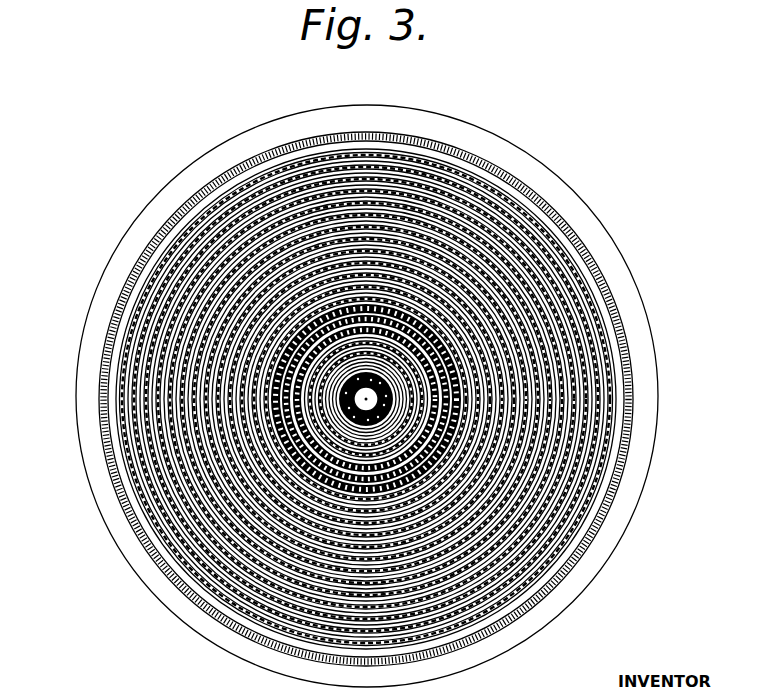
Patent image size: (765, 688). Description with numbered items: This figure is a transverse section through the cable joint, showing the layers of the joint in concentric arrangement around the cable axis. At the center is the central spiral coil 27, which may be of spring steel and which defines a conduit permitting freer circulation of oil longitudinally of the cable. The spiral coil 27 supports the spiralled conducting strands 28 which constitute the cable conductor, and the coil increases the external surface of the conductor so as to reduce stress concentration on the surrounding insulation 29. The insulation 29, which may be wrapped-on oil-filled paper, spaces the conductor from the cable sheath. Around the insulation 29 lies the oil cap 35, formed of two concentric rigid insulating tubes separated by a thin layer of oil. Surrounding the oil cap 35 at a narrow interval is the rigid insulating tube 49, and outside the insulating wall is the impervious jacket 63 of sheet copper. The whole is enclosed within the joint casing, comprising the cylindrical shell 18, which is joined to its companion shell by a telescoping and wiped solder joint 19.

The cylindrical shell 18 is at (494, 164).
The telescoping and wiped solder joint 19 is at (571, 189).
The central spiral coil 27 is at (398, 432).
The spiralled conducting strands 28 is at (398, 392).
The insulation 29 is at (450, 352).
The oil cap 35 is at (276, 409).
The rigid insulating tube 49 is at (203, 278).
The impervious jacket 63 is at (155, 532).